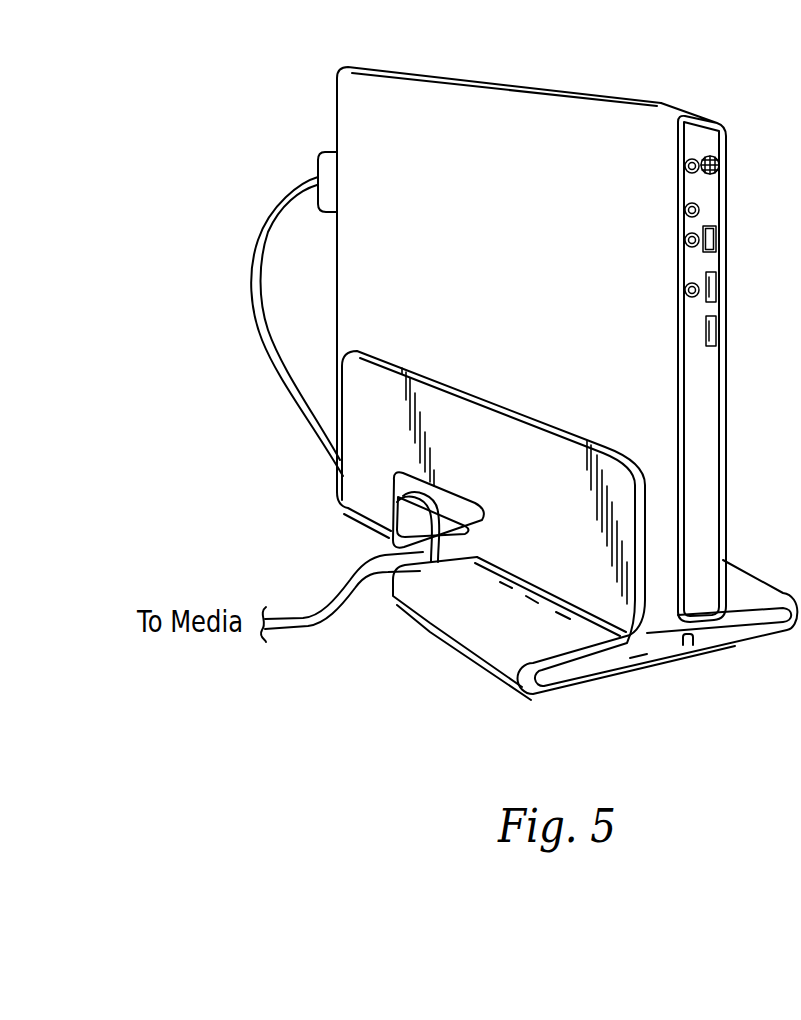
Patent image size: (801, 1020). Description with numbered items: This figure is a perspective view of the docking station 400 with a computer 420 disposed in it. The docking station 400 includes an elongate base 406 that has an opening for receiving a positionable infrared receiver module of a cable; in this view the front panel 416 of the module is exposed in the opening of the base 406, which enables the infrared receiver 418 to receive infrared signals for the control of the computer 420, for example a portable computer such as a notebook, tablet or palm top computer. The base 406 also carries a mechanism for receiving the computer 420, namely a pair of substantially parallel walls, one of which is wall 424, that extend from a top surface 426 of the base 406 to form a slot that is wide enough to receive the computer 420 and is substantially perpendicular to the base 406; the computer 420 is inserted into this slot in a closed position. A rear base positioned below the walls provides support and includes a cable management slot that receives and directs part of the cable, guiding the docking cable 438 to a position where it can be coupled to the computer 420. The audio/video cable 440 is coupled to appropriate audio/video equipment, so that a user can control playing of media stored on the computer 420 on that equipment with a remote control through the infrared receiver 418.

The docking station 400 is at (420, 670).
The elongate base 406 is at (510, 668).
The front panel 416 is at (640, 656).
The infrared receiver 418 is at (693, 645).
The computer 420 is at (641, 126).
The wall 424 is at (553, 455).
The top surface 426 is at (524, 620).
The docking cable 438 is at (258, 321).
The audio/video cable 440 is at (292, 613).